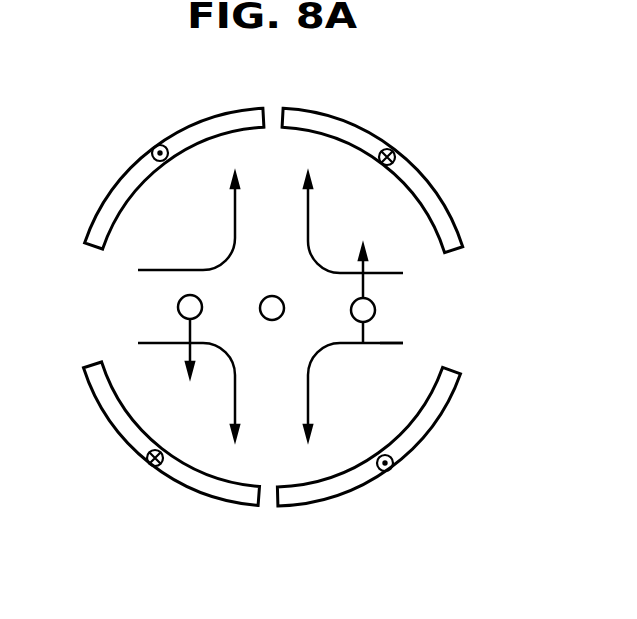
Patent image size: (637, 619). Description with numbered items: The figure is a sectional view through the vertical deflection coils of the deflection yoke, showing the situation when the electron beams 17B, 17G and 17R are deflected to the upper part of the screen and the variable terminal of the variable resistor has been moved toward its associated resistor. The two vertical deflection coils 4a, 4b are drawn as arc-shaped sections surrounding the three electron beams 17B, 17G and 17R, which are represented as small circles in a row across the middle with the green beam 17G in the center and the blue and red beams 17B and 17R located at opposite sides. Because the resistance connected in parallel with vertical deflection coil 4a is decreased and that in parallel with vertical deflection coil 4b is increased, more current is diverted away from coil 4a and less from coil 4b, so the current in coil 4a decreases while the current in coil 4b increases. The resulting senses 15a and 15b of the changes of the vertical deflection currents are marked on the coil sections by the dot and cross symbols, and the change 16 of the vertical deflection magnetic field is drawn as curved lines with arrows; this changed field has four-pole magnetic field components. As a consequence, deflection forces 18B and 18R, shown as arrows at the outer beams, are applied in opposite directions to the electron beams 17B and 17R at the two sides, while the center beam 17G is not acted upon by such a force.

The vertical deflection coil 4a is at (118, 186).
The vertical deflection coil 4b is at (437, 193).
The sense of change of vertical deflection current 15a is at (166, 146).
The sense of change of vertical deflection current 15b is at (382, 149).
The change of vertical deflection magnetic field 16 is at (386, 342).
The electron beam 17B is at (190, 295).
The electron beam 17G is at (272, 296).
The electron beam 17R is at (363, 345).
The deflection force 18B is at (190, 379).
The deflection force 18R is at (364, 241).